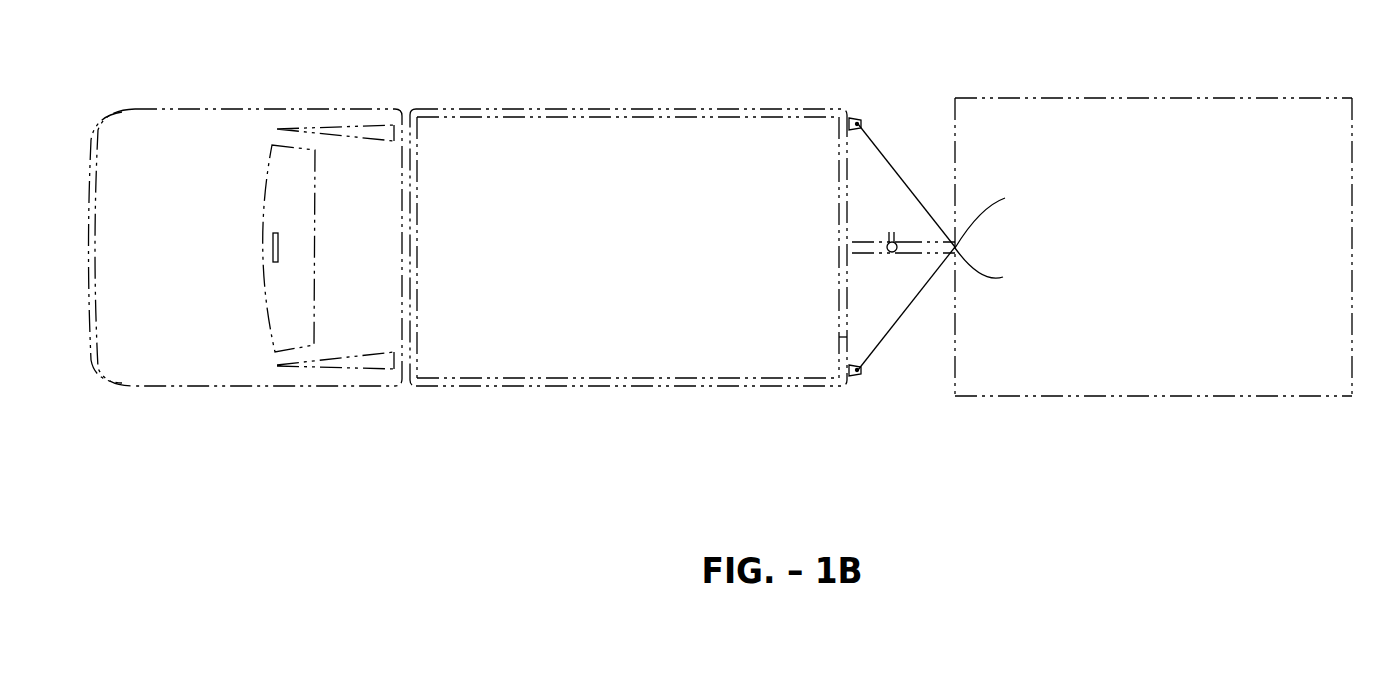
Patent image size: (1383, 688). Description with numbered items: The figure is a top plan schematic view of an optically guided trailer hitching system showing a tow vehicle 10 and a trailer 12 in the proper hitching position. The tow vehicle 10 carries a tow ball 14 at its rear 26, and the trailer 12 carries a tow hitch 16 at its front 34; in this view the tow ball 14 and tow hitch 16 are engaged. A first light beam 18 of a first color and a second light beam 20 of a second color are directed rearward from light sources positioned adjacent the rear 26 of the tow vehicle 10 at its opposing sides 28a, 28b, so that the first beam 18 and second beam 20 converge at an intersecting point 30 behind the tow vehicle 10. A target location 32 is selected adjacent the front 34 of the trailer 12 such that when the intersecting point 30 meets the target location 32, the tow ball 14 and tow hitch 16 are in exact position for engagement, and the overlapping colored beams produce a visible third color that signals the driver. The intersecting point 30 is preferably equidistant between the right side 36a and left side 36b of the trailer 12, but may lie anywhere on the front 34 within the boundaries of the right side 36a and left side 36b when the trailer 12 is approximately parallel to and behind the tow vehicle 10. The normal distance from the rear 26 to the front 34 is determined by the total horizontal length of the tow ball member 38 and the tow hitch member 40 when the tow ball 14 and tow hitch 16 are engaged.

The tow vehicle 10 is at (160, 123).
The trailer 12 is at (1290, 98).
The tow ball 14 is at (888, 240).
The tow hitch 16 is at (891, 240).
The first light beam 18 is at (858, 123).
The second light beam 20 is at (868, 357).
The rear 26 is at (840, 337).
The first side of tow vehicle 28a is at (540, 107).
The second side of tow vehicle 28b is at (537, 388).
The intersecting point 30 is at (999, 217).
The target location 32 is at (998, 270).
The front of trailer 34 is at (955, 125).
The right side of trailer 36a is at (1178, 98).
The left side of trailer 36b is at (1220, 396).
The tow ball member 38 is at (852, 256).
The tow hitch member 40 is at (920, 255).